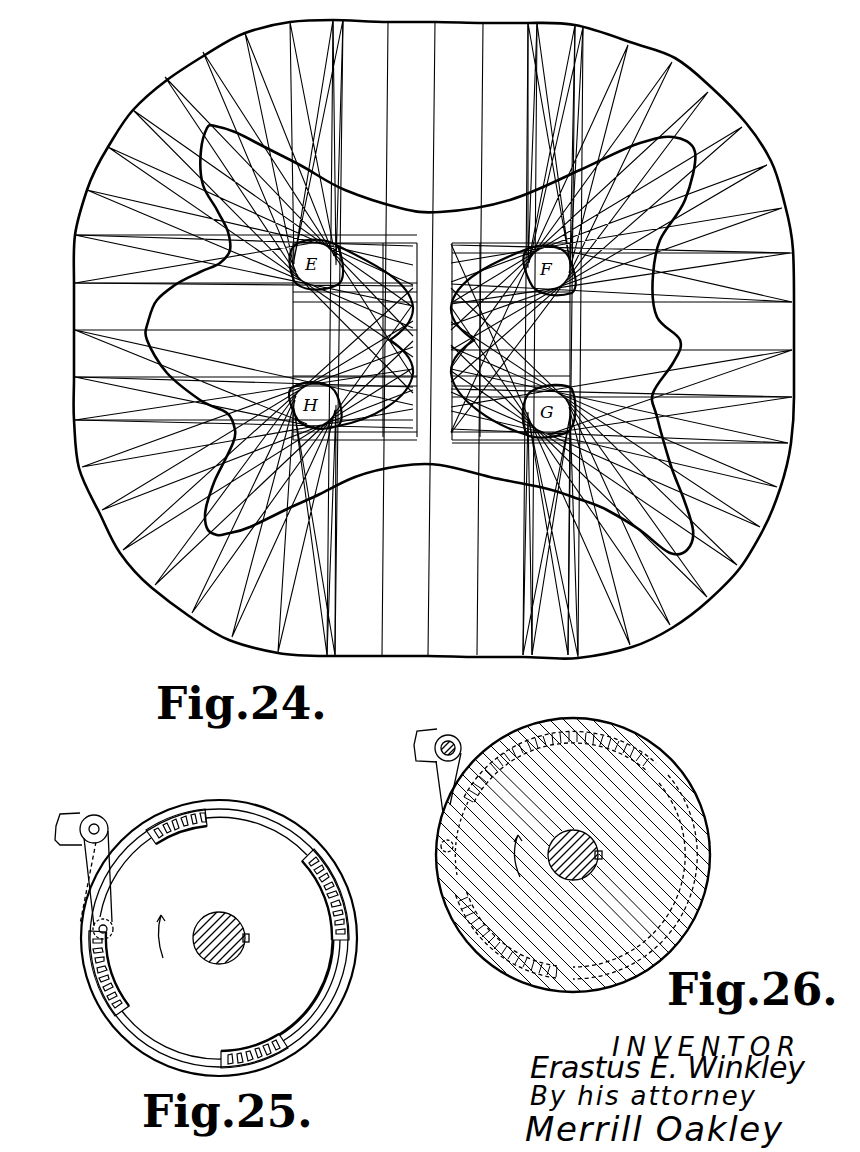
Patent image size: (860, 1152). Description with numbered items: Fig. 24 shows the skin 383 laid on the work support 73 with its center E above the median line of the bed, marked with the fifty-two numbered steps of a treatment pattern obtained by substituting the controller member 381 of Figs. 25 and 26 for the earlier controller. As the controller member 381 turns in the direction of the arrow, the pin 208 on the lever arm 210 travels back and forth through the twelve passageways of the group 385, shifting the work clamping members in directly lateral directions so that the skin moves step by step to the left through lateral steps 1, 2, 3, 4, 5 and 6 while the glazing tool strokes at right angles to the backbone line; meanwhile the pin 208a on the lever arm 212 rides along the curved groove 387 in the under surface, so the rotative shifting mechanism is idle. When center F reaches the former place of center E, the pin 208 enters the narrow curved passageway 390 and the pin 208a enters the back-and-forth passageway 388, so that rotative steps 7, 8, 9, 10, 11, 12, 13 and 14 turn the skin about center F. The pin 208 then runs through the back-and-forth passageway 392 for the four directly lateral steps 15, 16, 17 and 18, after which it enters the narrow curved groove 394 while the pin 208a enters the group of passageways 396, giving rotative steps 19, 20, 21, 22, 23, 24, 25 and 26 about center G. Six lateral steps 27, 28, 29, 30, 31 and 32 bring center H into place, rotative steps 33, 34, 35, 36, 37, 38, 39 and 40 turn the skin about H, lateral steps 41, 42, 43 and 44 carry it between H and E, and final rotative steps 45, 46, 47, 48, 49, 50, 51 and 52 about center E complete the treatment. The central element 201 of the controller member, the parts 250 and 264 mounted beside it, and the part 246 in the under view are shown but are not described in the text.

In FIG. 24, the treatment step 1 is at (338, 14).
In FIG. 24, the treatment step 2 is at (372, 14).
In FIG. 24, the treatment step 3 is at (413, 15).
In FIG. 24, the treatment step 4 is at (463, 14).
In FIG. 24, the treatment step 5 is at (510, 15).
In FIG. 24, the treatment step 6 is at (533, 14).
In FIG. 24, the treatment step 7 is at (562, 16).
In FIG. 24, the treatment step 8 is at (608, 26).
In FIG. 24, the treatment step 9 is at (655, 43).
In FIG. 24, the treatment step 10 is at (697, 66).
In FIG. 24, the treatment step 11 is at (733, 97).
In FIG. 24, the treatment step 12 is at (764, 133).
In FIG. 24, the treatment step 13 is at (786, 180).
In FIG. 24, the treatment step 14 is at (803, 228).
In FIG. 24, the directly lateral step 15 is at (806, 275).
In FIG. 24, the directly lateral step 16 is at (803, 323).
In FIG. 24, the directly lateral step 17 is at (803, 375).
In FIG. 24, the directly lateral step 18 is at (802, 416).
In FIG. 24, the treatment step 19 is at (796, 463).
In FIG. 24, the treatment step 20 is at (781, 510).
In FIG. 24, the treatment step 21 is at (757, 550).
In FIG. 24, the treatment step 22 is at (736, 585).
In FIG. 24, the treatment step 23 is at (697, 620).
In FIG. 24, the treatment step 24 is at (651, 648).
In FIG. 24, the treatment step 25 is at (604, 663).
In FIG. 24, the treatment step 26 is at (560, 668).
In FIG. 24, the treatment step 27 is at (526, 668).
In FIG. 24, the treatment step 28 is at (496, 668).
In FIG. 24, the treatment step 29 is at (433, 667).
In FIG. 24, the treatment step 30 is at (400, 667).
In FIG. 24, the treatment step 31 is at (355, 663).
In FIG. 24, the treatment step 32 is at (327, 663).
In FIG. 24, the treatment step 33 is at (297, 663).
In FIG. 24, the treatment step 34 is at (245, 655).
In FIG. 24, the treatment step 35 is at (198, 634).
In FIG. 24, the treatment step 36 is at (151, 609).
In FIG. 24, the treatment step 37 is at (122, 576).
In FIG. 24, the treatment step 38 is at (92, 537).
In FIG. 24, the treatment step 39 is at (71, 490).
In FIG. 24, the treatment step 40 is at (56, 445).
In FIG. 24, the treatment step 41 is at (54, 393).
In FIG. 24, the treatment step 42 is at (57, 350).
In FIG. 24, the treatment step 43 is at (57, 302).
In FIG. 24, the treatment step 44 is at (52, 262).
In FIG. 24, the treatment step 45 is at (62, 210).
In FIG. 24, the treatment step 46 is at (76, 165).
In FIG. 24, the treatment step 47 is at (104, 120).
In FIG. 24, the treatment step 48 is at (133, 80).
In FIG. 24, the treatment step 49 is at (176, 53).
In FIG. 24, the treatment step 50 is at (217, 30).
In FIG. 24, the treatment step 51 is at (262, 14).
In FIG. 24, the treatment step 52 is at (303, 10).
In FIG. 24, the work support 73 is at (450, 657).
In FIG. 24, the skin 383 is at (398, 466).
In FIG. 25, the controller member 381 is at (250, 803).
In FIG. 26, the controller member 381 is at (698, 802).
In FIG. 25, the narrow curved passageway 390 is at (278, 828).
In FIG. 25, the narrow curved groove 394 is at (326, 980).
In FIG. 25, the back-and-forth passageway 392 is at (166, 815).
In FIG. 25, the group of passageways 385 is at (183, 833).
In FIG. 25, the shaft 201 is at (237, 896).
In FIG. 25, the roller 250 is at (100, 826).
In FIG. 26, the roller 250 is at (452, 736).
In FIG. 25, the bracket 264 is at (66, 815).
In FIG. 25, the lever arm 210 is at (88, 872).
In FIG. 25, the pin 208 is at (93, 929).
In FIG. 26, the back-and-forth passageway 388 is at (607, 728).
In FIG. 26, the back-and-forth group of passageways 396 is at (683, 918).
In FIG. 26, the curved groove 387 is at (453, 884).
In FIG. 26, the pin 208a is at (441, 846).
In FIG. 26, the bracket 246 is at (426, 731).
In FIG. 26, the lever arm 212 is at (441, 792).